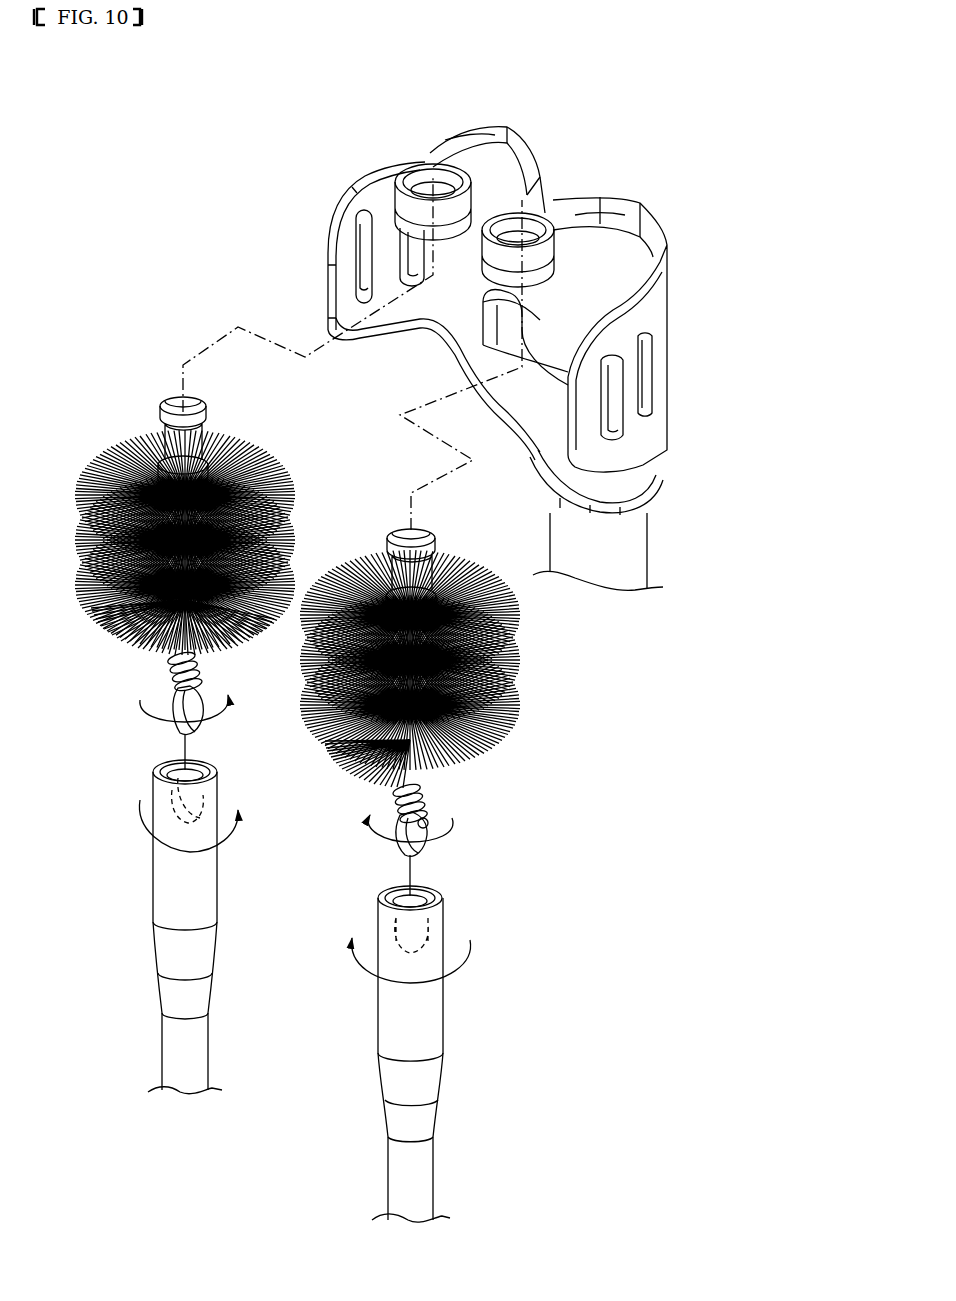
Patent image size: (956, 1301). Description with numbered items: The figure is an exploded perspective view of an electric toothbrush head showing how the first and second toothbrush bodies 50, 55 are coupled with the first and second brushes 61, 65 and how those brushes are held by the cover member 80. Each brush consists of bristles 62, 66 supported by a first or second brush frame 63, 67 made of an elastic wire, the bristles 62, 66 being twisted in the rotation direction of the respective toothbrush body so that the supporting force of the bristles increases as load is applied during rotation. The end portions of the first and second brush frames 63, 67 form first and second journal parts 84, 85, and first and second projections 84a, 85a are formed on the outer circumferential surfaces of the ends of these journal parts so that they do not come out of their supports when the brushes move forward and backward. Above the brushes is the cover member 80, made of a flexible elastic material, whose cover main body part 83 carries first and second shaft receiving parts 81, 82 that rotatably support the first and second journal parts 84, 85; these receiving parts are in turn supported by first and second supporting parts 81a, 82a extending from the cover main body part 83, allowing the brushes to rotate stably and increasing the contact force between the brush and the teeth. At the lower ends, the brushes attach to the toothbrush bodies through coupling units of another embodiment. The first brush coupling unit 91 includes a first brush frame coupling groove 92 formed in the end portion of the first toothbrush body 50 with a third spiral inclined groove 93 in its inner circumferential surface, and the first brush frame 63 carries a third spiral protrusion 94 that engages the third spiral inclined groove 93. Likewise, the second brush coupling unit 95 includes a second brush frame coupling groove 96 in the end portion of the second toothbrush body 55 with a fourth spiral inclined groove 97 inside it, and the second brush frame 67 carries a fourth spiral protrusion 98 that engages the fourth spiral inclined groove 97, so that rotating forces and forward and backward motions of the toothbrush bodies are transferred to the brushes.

The first toothbrush body 50 is at (178, 1000).
The second toothbrush body 55 is at (415, 1117).
The first brush 61 is at (78, 413).
The bristles 62 is at (87, 607).
The first brush frame 63 is at (173, 672).
The second brush 65 is at (542, 687).
The bristles 66 is at (477, 753).
The second brush frame 67 is at (427, 805).
The cover member 80 is at (645, 178).
The first shaft receiving part 81 is at (410, 187).
The first supporting part 81a is at (455, 152).
The second shaft receiving part 82 is at (537, 233).
The second supporting part 82a is at (590, 233).
The cover main body part 83 is at (493, 387).
The first journal part 84 is at (210, 438).
The first projection 84a is at (160, 418).
The second journal part 85 is at (387, 565).
The second projection 85a is at (387, 567).
The first brush coupling unit 91 is at (132, 783).
The first brush frame coupling groove 92 is at (157, 768).
The third spiral inclined groove 93 is at (200, 803).
The third spiral protrusion 94 is at (167, 717).
The second brush coupling unit 95 is at (462, 885).
The second brush frame coupling groove 96 is at (393, 902).
The fourth spiral inclined groove 97 is at (427, 947).
The fourth spiral protrusion 98 is at (422, 857).